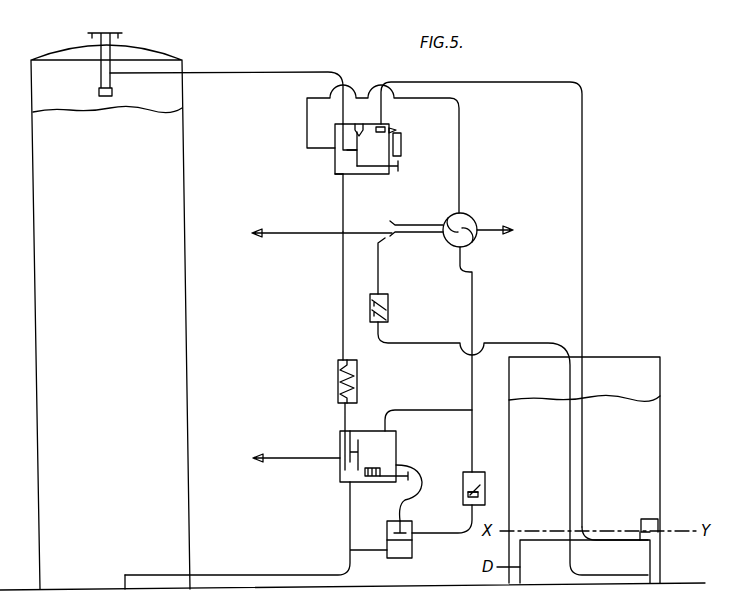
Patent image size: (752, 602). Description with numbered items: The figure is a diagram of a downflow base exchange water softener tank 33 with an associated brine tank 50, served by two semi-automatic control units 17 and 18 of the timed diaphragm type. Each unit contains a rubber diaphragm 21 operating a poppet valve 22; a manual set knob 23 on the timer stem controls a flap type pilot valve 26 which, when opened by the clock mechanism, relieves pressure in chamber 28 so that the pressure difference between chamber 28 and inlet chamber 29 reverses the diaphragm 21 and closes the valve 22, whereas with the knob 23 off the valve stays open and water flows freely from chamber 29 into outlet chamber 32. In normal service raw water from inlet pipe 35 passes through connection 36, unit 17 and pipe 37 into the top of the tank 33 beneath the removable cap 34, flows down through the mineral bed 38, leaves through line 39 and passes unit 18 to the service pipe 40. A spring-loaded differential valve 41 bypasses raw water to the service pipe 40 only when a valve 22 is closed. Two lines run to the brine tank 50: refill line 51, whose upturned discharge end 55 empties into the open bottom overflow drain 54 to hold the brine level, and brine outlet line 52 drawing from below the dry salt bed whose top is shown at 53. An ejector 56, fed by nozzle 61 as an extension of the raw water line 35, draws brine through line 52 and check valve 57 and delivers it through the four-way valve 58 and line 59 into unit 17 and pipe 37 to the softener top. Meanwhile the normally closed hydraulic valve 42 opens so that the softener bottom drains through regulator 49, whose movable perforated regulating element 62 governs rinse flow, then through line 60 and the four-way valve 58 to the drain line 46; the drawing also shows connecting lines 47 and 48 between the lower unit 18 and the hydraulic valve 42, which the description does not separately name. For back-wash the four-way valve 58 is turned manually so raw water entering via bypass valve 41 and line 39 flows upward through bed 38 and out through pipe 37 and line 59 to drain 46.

The control unit 17 is at (350, 176).
The control unit 18 is at (358, 480).
The rubber diaphragm 21 is at (359, 136).
The poppet valve 22 is at (347, 152).
The manual set knob 23 is at (401, 146).
The pilot valve 26 is at (377, 140).
The chamber 28 is at (397, 131).
The chamber 29 is at (337, 176).
The chamber 32 is at (335, 135).
The softener tank 33 is at (182, 190).
The cap 34 is at (100, 33).
The raw water inlet pipe 35 is at (305, 234).
The connection line 36 is at (343, 296).
The pipe 37 is at (262, 73).
The bed of mineral 38 is at (66, 112).
The pipe 39 is at (262, 573).
The service pipe 40 is at (348, 483).
The spring-loaded differential valve 41 is at (357, 378).
The hydraulic valve 42 is at (412, 550).
The drain line 46 is at (493, 232).
The connecting line 47 is at (422, 478).
The connecting line 48 is at (406, 522).
The regulator 49 is at (463, 488).
The brine tank 50 is at (660, 417).
The refill line 51 is at (582, 236).
The brine outlet line 52 is at (525, 343).
The top of the salt bed 53 is at (603, 398).
The overflow drain 54 is at (644, 518).
The upturned discharge end 55 is at (650, 537).
The ejector 56 is at (410, 238).
The check valve 57 is at (388, 306).
The four-way valve 58 is at (473, 220).
The line 59 is at (459, 142).
The line 60 is at (472, 377).
The nozzle 61 is at (378, 250).
The regulating element 62 is at (484, 488).